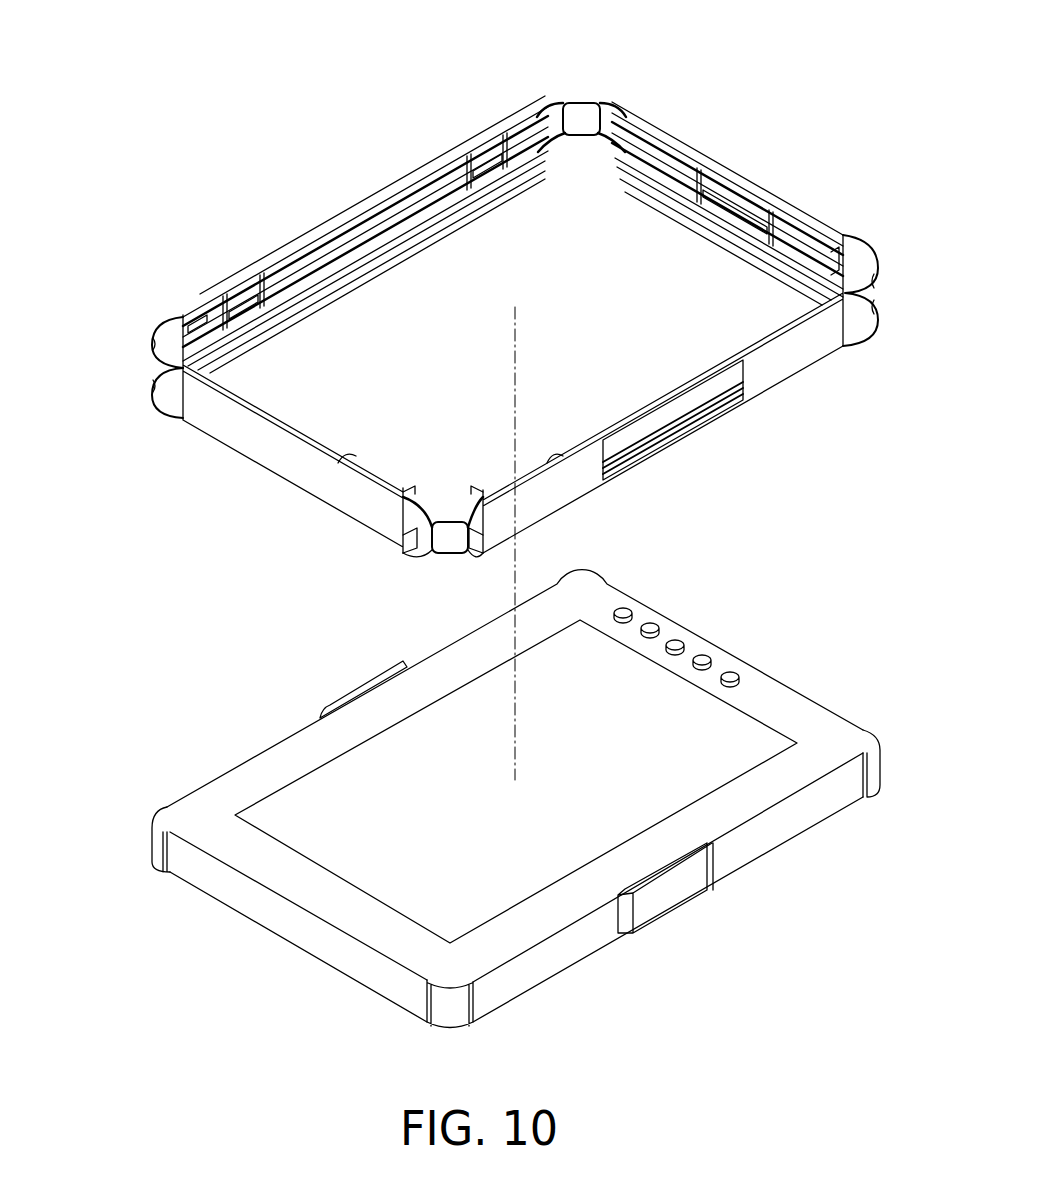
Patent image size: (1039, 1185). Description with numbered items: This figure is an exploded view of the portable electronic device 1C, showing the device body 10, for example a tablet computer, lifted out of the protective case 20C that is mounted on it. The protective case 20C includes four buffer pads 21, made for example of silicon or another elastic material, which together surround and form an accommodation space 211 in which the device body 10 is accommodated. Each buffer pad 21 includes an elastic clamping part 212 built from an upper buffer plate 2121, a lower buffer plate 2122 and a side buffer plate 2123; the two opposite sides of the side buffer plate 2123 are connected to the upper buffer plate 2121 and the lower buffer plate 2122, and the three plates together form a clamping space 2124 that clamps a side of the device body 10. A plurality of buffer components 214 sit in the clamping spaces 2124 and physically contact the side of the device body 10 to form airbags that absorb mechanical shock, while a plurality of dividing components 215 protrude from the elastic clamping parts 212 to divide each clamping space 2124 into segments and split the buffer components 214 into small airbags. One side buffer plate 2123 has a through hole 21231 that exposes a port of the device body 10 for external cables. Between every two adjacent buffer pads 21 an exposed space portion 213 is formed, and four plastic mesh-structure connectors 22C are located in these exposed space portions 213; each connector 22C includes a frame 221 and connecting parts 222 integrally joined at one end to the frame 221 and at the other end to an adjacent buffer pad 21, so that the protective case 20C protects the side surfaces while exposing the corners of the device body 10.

The portable electronic device 1C is at (79, 40).
The device body 10 is at (810, 726).
The protective case 20C is at (392, 380).
The buffer pad 21 is at (158, 180).
The accommodation space 211 is at (594, 196).
The elastic clamping part 212 is at (316, 223).
The upper buffer plate 2121 is at (345, 458).
The lower buffer plate 2122 is at (410, 550).
The side buffer plate 2123 is at (355, 497).
The through hole 21231 is at (702, 402).
The clamping space 2124 is at (335, 264).
The exposed space portion 213 is at (857, 268).
The buffer component 214 is at (241, 325).
The dividing component 215 is at (248, 312).
The connector 22C is at (445, 512).
The frame 221 is at (165, 375).
The connecting part 222 is at (178, 320).